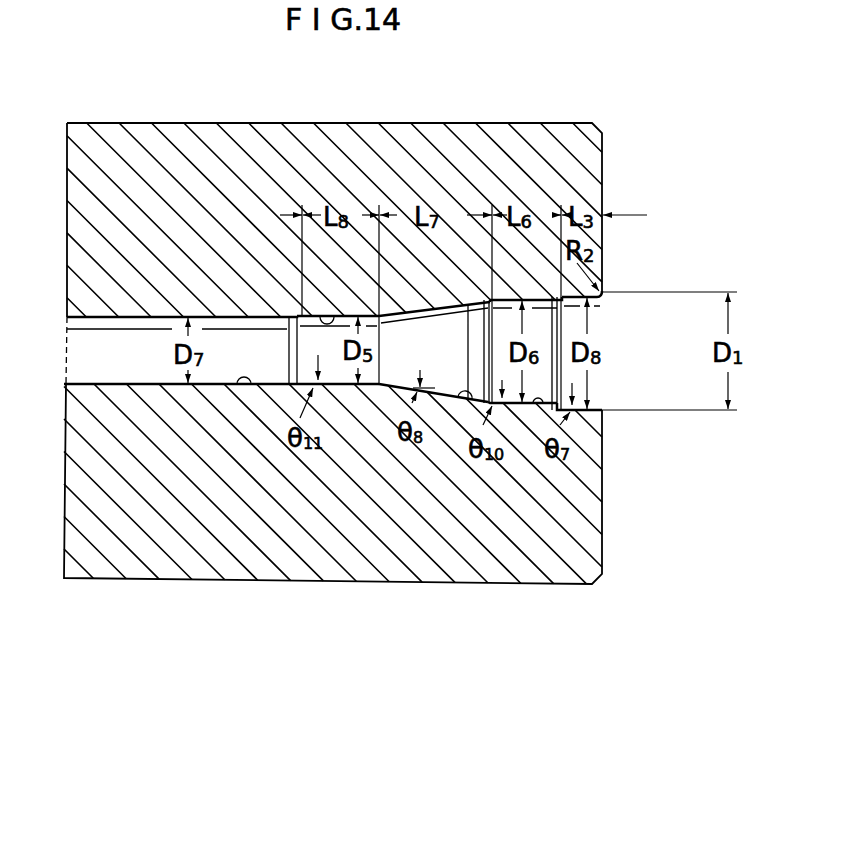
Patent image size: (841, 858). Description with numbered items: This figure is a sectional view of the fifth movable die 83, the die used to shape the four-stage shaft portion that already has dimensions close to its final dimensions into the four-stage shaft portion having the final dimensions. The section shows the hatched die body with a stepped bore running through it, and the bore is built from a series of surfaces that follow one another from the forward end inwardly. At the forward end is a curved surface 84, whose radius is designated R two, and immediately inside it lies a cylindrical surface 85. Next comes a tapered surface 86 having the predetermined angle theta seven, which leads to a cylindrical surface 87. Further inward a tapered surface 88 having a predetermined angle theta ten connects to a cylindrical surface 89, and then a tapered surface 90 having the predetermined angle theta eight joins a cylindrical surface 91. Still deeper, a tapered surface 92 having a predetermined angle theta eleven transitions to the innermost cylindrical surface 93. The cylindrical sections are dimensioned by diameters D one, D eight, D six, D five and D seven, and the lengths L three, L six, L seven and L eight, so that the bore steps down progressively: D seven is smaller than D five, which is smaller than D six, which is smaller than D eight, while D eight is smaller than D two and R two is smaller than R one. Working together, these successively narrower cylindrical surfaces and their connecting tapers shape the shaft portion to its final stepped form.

The fifth movable die 83 is at (220, 128).
The curved surface 84 is at (604, 408).
The cylindrical surface 85 is at (598, 298).
The tapered surface 86 is at (559, 294).
The cylindrical surface 87 is at (527, 408).
The tapered surface 88 is at (473, 300).
The cylindrical surface 89 is at (453, 400).
The tapered surface 90 is at (421, 311).
The cylindrical surface 91 is at (333, 313).
The tapered surface 92 is at (296, 312).
The cylindrical surface 93 is at (245, 386).